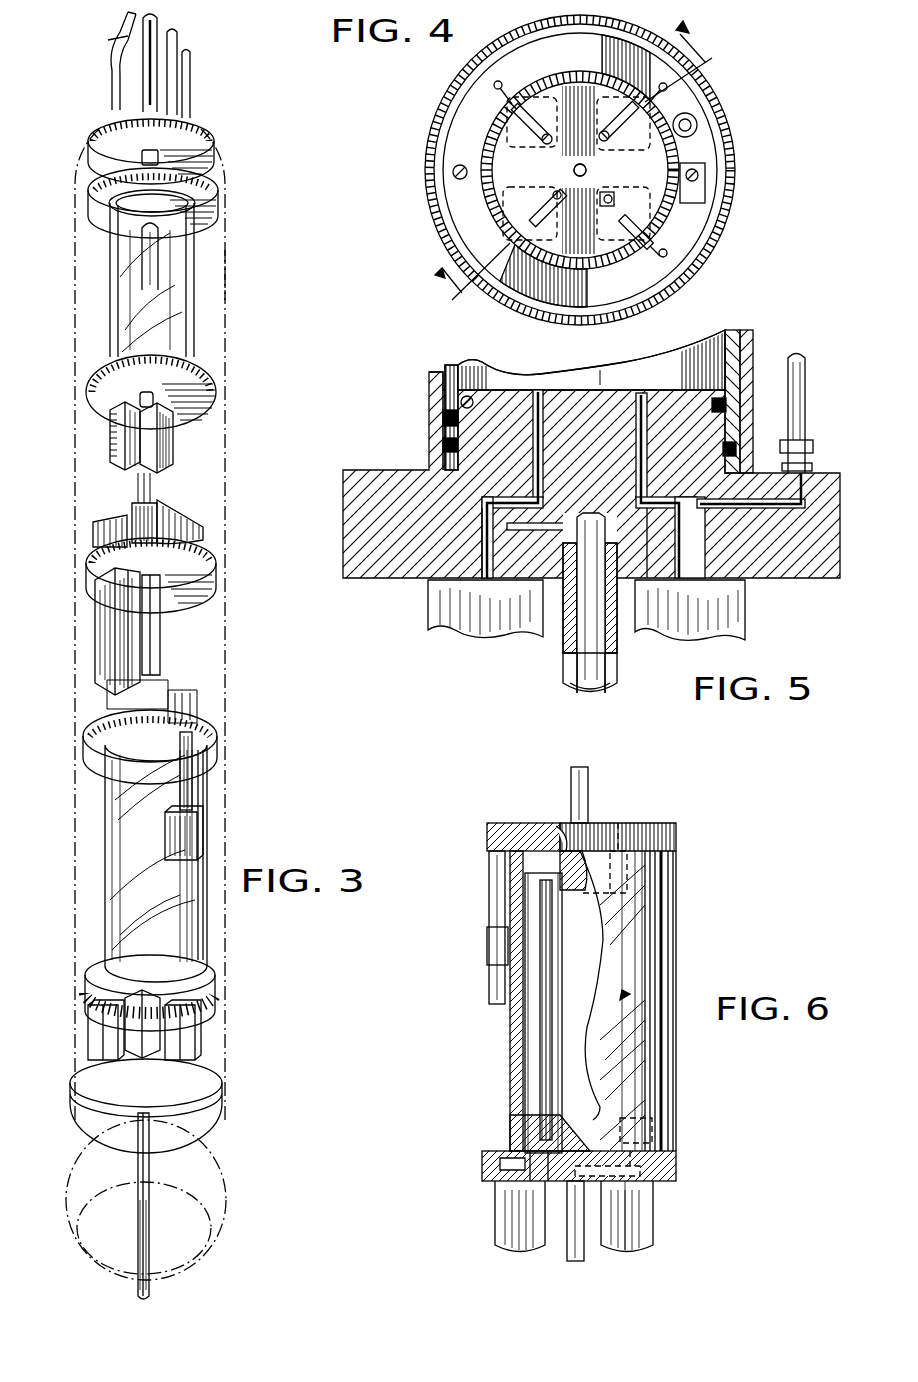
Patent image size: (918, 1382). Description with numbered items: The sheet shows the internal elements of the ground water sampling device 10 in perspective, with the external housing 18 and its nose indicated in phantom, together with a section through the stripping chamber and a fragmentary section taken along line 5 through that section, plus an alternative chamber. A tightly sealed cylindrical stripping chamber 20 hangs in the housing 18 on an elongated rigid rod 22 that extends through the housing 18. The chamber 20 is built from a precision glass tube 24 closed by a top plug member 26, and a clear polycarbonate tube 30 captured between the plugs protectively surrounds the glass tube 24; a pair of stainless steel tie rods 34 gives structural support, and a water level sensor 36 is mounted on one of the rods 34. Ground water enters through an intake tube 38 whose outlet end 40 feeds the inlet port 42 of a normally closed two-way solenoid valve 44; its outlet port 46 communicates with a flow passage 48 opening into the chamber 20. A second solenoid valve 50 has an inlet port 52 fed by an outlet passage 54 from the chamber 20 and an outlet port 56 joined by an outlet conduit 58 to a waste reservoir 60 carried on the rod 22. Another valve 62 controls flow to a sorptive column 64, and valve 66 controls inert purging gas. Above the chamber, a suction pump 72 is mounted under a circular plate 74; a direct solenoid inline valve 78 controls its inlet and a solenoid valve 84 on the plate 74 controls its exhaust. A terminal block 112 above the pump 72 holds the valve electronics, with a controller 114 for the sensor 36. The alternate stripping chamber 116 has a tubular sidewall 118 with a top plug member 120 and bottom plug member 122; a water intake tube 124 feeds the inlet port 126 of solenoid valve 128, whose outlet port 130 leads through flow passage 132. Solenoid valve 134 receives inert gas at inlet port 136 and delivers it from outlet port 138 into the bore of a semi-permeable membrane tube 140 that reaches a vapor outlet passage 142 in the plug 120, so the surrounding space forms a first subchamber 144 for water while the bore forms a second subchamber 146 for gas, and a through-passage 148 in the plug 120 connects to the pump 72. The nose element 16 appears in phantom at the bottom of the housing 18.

In FIG. 4, the section line 5- 5 is at (577, 170).
In FIG. 3, the device 10 is at (226, 273).
In FIG. 3, the nose cap 16 is at (225, 1175).
In FIG. 3, the housing 18 is at (228, 428).
In FIG. 4, the housing 18 is at (728, 240).
In FIG. 3, the stripping chamber 20 is at (85, 950).
In FIG. 3, the rod 22 is at (160, 20).
In FIG. 5, the glass tube 24 is at (452, 364).
In FIG. 3, the top plug member 26 is at (92, 762).
In FIG. 4, the polycarbonate tube 30 is at (540, 312).
In FIG. 5, the polycarbonate tube 30 is at (429, 428).
In FIG. 3, the tie rods 34 is at (195, 780).
In FIG. 4, the tie rods 34 is at (453, 180).
In FIG. 3, the sensor 36 is at (203, 838).
In FIG. 4, the sensor 36 is at (712, 206).
In FIG. 5, the intake tube 38 is at (563, 648).
In FIG. 5, the outlet end 40 is at (605, 525).
In FIG. 5, the inlet port 42 is at (510, 560).
In FIG. 3, the solenoid valve 44 is at (92, 1012).
In FIG. 4, the solenoid valve 44 is at (515, 222).
In FIG. 5, the solenoid valve 44 is at (428, 612).
In FIG. 5, the outlet port 46 is at (478, 575).
In FIG. 4, the flow passage 48 is at (556, 222).
In FIG. 5, the flow passage 48 is at (544, 447).
In FIG. 4, the solenoid valve 50 is at (640, 152).
In FIG. 5, the solenoid valve 50 is at (748, 622).
In FIG. 5, the inlet port 52 is at (672, 560).
In FIG. 4, the outlet passage 54 is at (590, 142).
In FIG. 5, the outlet passage 54 is at (648, 447).
In FIG. 5, the outlet port 56 is at (700, 562).
In FIG. 5, the outlet conduit 58 is at (806, 398).
In FIG. 3, the waste reservoir 60 is at (194, 325).
In FIG. 3, the solenoid valve 62 is at (88, 1058).
In FIG. 4, the solenoid valve 62 is at (502, 132).
In FIG. 3, the sorptive column 64 is at (207, 905).
In FIG. 3, the solenoid valve 66 is at (195, 1025).
In FIG. 4, the solenoid valve 66 is at (592, 268).
In FIG. 3, the suction pump 72 is at (95, 645).
In FIG. 3, the circular plate 74 is at (175, 612).
In FIG. 3, the solenoid inline valve 78 is at (112, 520).
In FIG. 3, the solenoid valve 84 is at (170, 513).
In FIG. 3, the terminal block 112 is at (110, 445).
In FIG. 3, the controller 114 is at (173, 452).
In FIG. 6, the alternate stripping chamber 116 is at (678, 958).
In FIG. 6, the tubular sidewall 118 is at (512, 1095).
In FIG. 6, the top plug member 120 is at (670, 823).
In FIG. 6, the bottom plug member 122 is at (482, 1165).
In FIG. 6, the water intake tube 124 is at (570, 1258).
In FIG. 6, the inlet port 126 is at (650, 1220).
In FIG. 6, the solenoid valve 128 is at (655, 1250).
In FIG. 6, the outlet port 130 is at (640, 1190).
In FIG. 6, the flow passage 132 is at (652, 1125).
In FIG. 6, the solenoid valve 134 is at (498, 1248).
In FIG. 6, the inlet port 136 is at (520, 1175).
In FIG. 6, the outlet port 138 is at (535, 1180).
In FIG. 6, the tube 140 is at (526, 1032).
In FIG. 6, the vapor outlet passage 142 is at (550, 823).
In FIG. 6, the first subchamber 144 is at (602, 982).
In FIG. 6, the second subchamber 146 is at (540, 1050).
In FIG. 6, the through-passage 148 is at (618, 823).